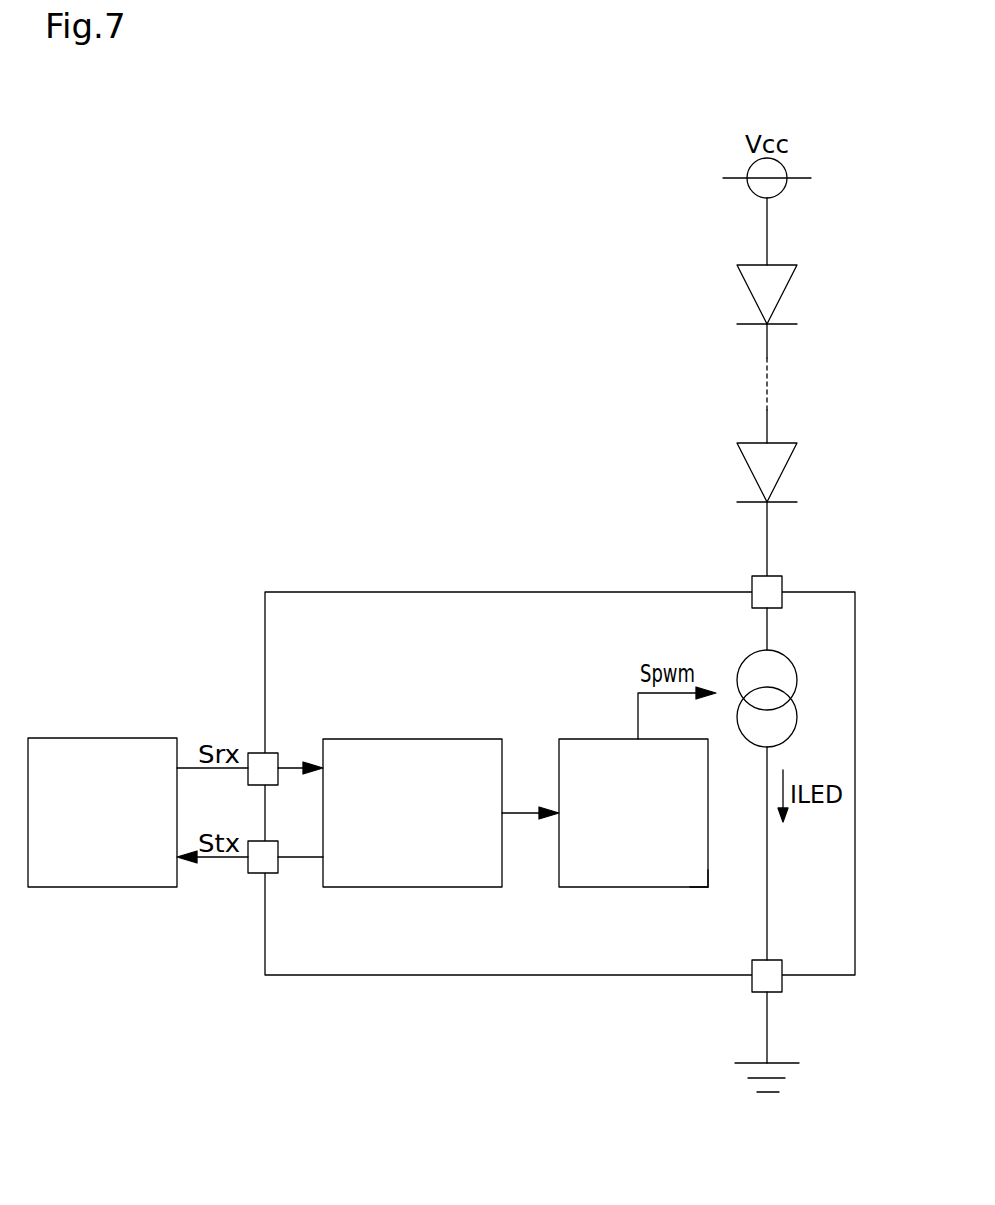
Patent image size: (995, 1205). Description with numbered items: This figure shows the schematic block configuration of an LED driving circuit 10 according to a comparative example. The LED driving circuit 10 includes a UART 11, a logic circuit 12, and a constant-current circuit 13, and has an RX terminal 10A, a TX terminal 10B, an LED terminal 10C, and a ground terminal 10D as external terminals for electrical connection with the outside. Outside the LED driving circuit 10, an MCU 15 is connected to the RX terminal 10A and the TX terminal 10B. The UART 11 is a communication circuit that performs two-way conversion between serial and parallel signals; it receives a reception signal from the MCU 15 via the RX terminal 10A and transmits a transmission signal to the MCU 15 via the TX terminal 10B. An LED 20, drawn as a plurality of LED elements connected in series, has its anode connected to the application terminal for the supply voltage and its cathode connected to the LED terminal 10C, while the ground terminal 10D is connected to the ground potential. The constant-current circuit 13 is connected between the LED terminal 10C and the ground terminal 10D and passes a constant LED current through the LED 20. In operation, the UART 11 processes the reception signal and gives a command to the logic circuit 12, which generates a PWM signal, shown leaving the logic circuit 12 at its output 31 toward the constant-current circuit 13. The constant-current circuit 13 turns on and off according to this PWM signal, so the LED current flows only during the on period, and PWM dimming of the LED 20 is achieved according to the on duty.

The LED driving circuit 10 is at (830, 591).
The RX terminal 10A is at (258, 753).
The TX terminal 10B is at (258, 873).
The LED terminal 10C is at (752, 576).
The ground terminal 10D is at (760, 992).
The UART 11 is at (470, 739).
The logic circuit 12 is at (570, 739).
The constant-current circuit 13 is at (797, 700).
The MCU 15 is at (150, 738).
The LED 20 is at (782, 393).
The output node 31 is at (708, 887).